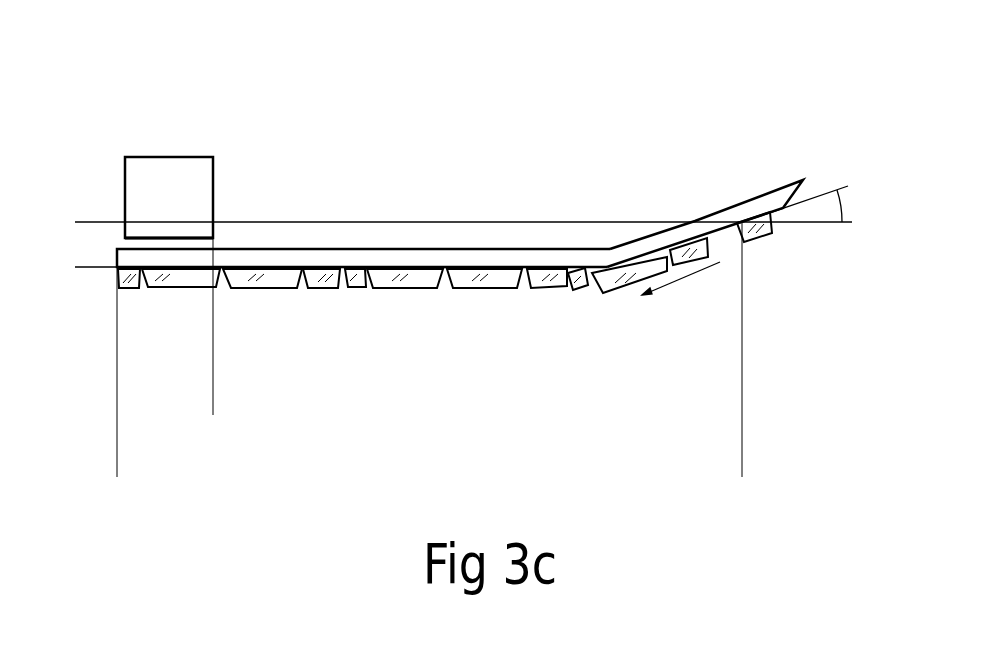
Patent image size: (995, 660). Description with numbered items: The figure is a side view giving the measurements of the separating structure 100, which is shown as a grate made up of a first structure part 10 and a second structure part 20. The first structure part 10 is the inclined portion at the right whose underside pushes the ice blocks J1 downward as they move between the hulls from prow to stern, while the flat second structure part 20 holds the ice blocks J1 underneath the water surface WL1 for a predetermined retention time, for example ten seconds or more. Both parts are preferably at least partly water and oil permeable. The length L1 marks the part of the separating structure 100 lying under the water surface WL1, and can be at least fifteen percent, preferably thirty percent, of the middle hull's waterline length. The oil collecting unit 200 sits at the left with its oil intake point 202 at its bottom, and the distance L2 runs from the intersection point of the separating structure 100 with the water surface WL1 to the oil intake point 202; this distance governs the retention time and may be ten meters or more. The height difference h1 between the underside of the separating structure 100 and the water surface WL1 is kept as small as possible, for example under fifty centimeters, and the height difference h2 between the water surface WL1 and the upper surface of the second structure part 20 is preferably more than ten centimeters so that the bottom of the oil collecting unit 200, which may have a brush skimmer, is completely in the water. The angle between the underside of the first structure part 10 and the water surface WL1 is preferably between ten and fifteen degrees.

The separating structure 100 is at (568, 93).
The first structure part 10 is at (700, 213).
The second structure part 20 is at (468, 248).
The oil collecting unit 200 is at (176, 156).
The oil intake point 202 is at (213, 227).
The ice blocks J1 is at (500, 288).
The water surface WL1 is at (86, 218).
The height difference h1 is at (93, 222).
The height difference h2 is at (314, 268).
The length L1 is at (742, 468).
The distance L2 is at (742, 406).